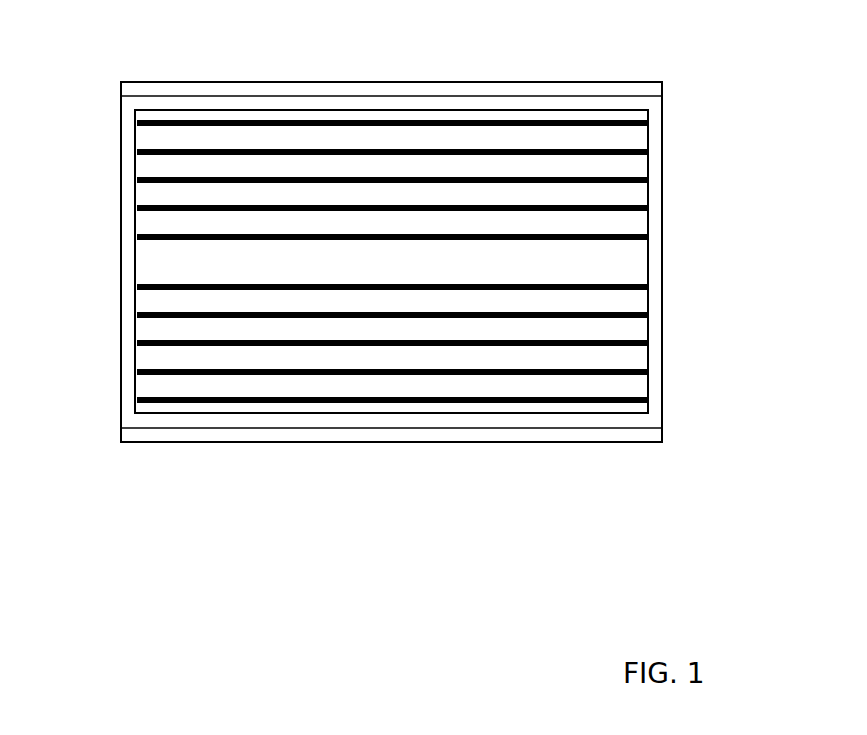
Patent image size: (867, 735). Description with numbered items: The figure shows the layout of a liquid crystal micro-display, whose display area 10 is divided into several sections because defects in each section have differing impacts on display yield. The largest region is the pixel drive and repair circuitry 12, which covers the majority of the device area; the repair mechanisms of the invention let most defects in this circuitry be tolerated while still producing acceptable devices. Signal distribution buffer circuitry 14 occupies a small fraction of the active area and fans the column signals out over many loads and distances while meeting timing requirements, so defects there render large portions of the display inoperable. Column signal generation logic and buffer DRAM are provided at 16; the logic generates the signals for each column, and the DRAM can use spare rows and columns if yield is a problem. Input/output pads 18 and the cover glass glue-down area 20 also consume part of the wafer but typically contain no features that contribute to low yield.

The display area 10 is at (196, 56).
The pixel drive and repair circuitry 12 is at (158, 257).
The signal distribution buffer circuitry 14 is at (140, 342).
The column signal generation logic and buffer DRAM 16 is at (142, 116).
The input/output pads 18 is at (653, 88).
The cover glass glue-down area 20 is at (655, 327).